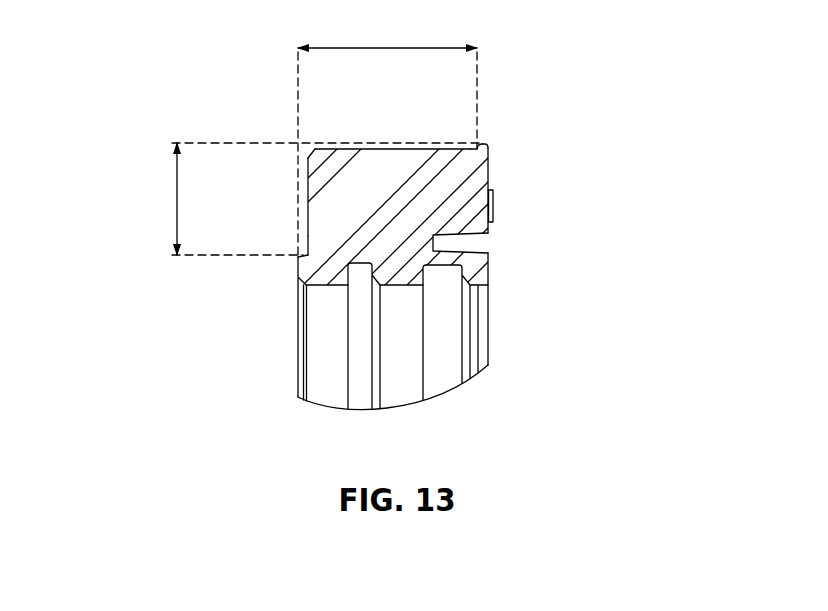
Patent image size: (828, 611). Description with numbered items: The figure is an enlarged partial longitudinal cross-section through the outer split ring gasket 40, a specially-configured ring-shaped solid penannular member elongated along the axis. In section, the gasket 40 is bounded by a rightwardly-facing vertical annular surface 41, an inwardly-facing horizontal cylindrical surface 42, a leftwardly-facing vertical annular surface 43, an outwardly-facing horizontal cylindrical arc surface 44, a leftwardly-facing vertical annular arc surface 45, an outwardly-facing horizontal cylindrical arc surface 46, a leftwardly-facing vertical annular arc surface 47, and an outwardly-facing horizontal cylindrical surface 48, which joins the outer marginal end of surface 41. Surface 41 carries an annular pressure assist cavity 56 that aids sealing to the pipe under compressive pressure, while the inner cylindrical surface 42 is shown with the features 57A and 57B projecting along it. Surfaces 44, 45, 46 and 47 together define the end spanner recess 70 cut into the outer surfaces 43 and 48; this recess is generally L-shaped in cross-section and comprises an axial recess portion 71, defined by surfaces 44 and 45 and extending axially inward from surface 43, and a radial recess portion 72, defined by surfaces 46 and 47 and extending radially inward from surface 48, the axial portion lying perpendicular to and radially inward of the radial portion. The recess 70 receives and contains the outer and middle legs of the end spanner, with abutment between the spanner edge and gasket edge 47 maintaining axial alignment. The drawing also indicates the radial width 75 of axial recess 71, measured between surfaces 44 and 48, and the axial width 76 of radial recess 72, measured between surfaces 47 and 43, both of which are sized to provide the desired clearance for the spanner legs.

The outer split ring gasket 40 is at (546, 139).
The rightwardly-facing vertical annular surface 41 is at (488, 173).
The inwardly-facing horizontal cylindrical surface 42 is at (328, 285).
The leftwardly-facing vertical annular surface 43 is at (298, 268).
The outwardly-facing horizontal cylindrical arc surface 44 is at (302, 254).
The leftwardly-facing vertical annular arc surface 45 is at (308, 192).
The outwardly-facing horizontal cylindrical arc surface 46 is at (343, 149).
The leftwardly-facing vertical annular arc surface 47 is at (472, 147).
The outwardly-facing horizontal cylindrical surface 48 is at (486, 144).
The annular pressure assist cavity 56 is at (469, 243).
The first tooth 57A is at (362, 272).
The second tooth 57B is at (442, 277).
The end spanner recess 70 is at (329, 146).
The axial recess portion 71 is at (302, 236).
The radial recess portion 72 is at (456, 141).
The radial width 75 is at (177, 202).
The axial width 76 is at (407, 48).